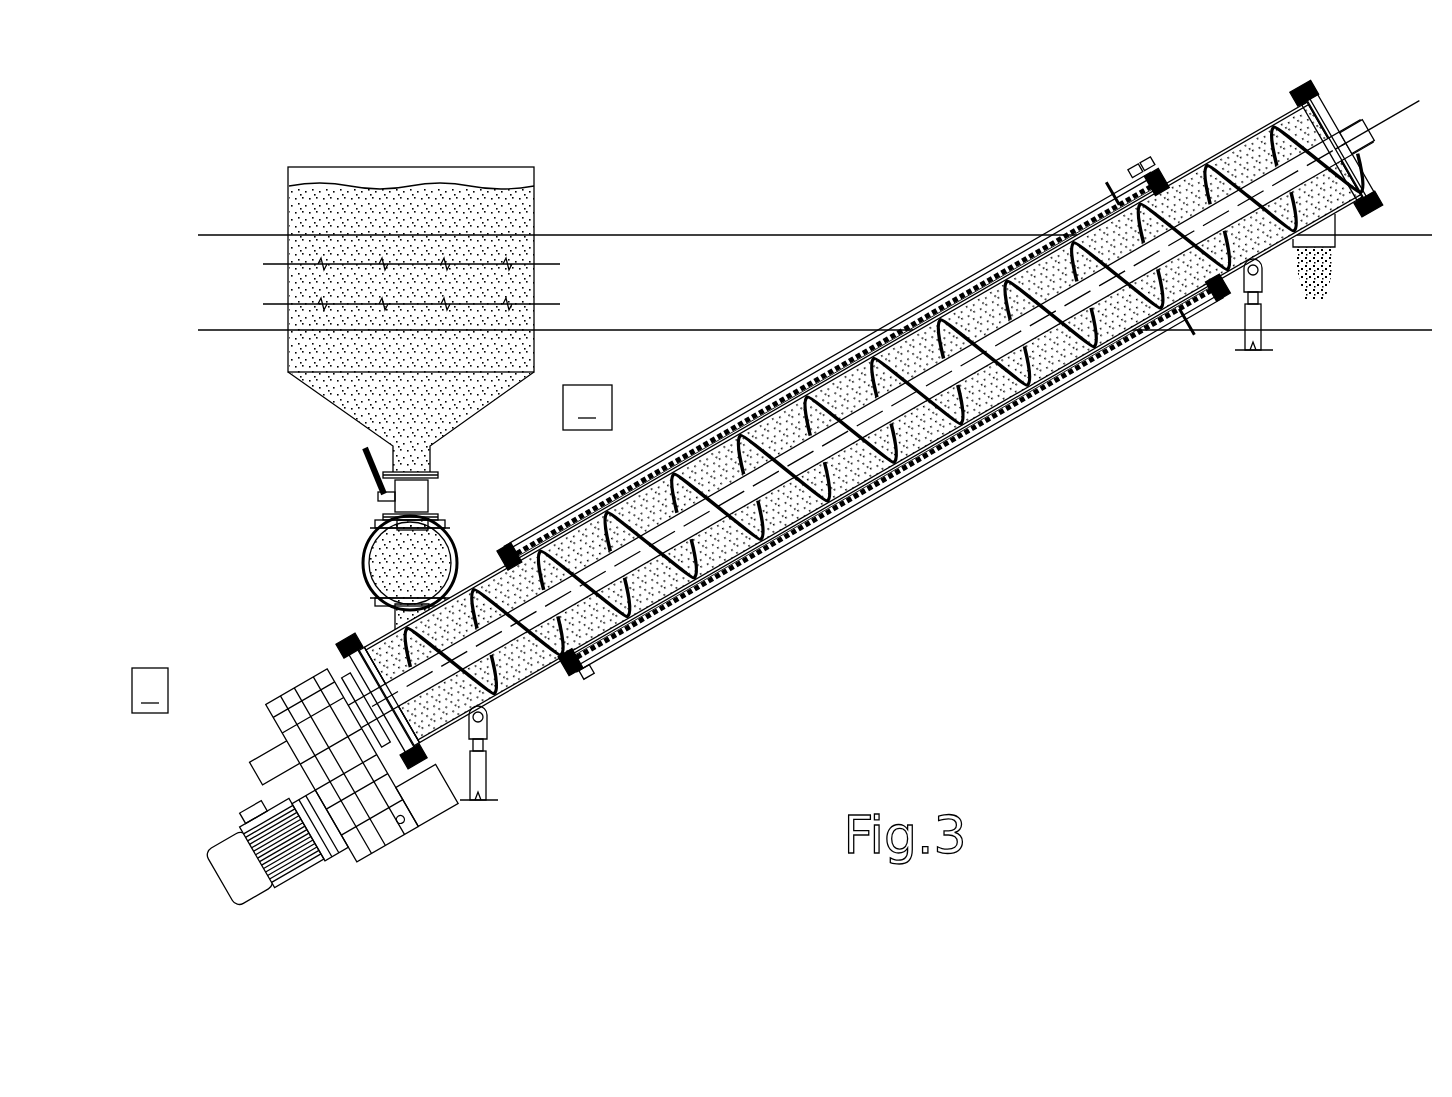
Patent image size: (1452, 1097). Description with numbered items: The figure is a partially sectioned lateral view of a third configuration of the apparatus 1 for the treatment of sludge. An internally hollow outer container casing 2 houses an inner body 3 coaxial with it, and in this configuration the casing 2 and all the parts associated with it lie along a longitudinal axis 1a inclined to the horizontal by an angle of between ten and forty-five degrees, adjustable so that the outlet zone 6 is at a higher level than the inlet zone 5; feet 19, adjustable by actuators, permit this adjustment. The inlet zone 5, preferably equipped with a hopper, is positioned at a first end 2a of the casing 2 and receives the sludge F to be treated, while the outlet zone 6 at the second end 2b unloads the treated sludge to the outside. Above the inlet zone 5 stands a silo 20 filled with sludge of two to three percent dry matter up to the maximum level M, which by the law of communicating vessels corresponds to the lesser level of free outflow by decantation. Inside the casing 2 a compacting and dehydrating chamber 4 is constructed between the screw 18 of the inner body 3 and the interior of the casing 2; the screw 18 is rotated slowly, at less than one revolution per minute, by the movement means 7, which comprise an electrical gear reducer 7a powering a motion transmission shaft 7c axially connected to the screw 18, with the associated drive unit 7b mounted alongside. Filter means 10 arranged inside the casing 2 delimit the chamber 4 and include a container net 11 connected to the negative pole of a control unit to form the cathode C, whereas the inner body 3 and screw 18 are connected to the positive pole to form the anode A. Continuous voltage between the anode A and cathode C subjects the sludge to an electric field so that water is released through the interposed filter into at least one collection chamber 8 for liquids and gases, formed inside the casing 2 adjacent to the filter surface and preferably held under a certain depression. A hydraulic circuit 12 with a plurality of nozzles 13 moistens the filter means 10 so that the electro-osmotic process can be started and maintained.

The apparatus for the treatment of sludge 1 is at (782, 497).
The longitudinal axis 1a is at (1413, 100).
The outer container casing 2 is at (892, 453).
The first end of the outer casing 2a is at (555, 672).
The second end of the outer casing 2b is at (1170, 175).
The inner body 3 is at (700, 640).
The compacting and dehydrating chamber 4 is at (1062, 385).
The inlet zone 5 is at (322, 572).
The outlet zone 6 is at (1327, 250).
The movement means 7 is at (302, 798).
The electrical gear reducer 7a is at (235, 883).
The gear reducer 7b is at (370, 843).
The motion transmission shaft 7c is at (422, 785).
The collection chamber 8 is at (1115, 388).
The filter means 10 is at (1197, 335).
The container net 11 is at (1003, 427).
The hydraulic circuit 12 is at (947, 463).
The nozzles 13 is at (800, 533).
The screw 18 is at (887, 420).
The feet 19 is at (490, 785).
The silo 20 is at (288, 197).
The maximum level M is at (210, 235).
The sludge F is at (323, 353).
The anode A is at (263, 743).
The cathode C is at (497, 552).